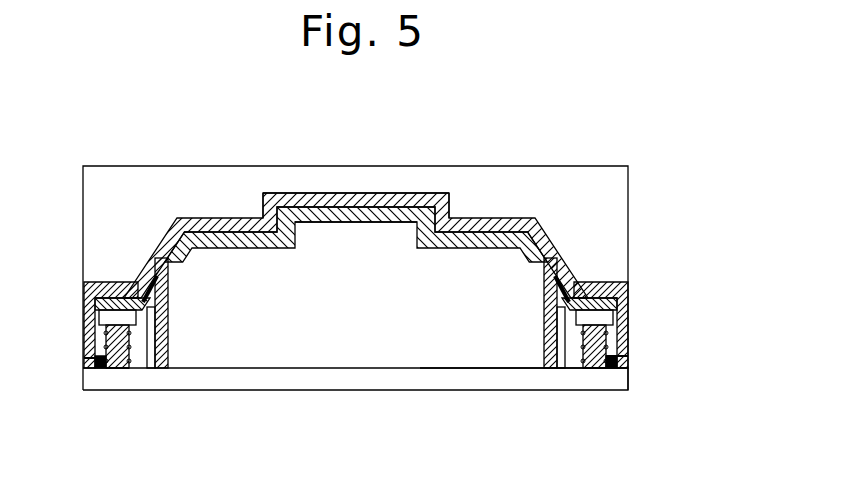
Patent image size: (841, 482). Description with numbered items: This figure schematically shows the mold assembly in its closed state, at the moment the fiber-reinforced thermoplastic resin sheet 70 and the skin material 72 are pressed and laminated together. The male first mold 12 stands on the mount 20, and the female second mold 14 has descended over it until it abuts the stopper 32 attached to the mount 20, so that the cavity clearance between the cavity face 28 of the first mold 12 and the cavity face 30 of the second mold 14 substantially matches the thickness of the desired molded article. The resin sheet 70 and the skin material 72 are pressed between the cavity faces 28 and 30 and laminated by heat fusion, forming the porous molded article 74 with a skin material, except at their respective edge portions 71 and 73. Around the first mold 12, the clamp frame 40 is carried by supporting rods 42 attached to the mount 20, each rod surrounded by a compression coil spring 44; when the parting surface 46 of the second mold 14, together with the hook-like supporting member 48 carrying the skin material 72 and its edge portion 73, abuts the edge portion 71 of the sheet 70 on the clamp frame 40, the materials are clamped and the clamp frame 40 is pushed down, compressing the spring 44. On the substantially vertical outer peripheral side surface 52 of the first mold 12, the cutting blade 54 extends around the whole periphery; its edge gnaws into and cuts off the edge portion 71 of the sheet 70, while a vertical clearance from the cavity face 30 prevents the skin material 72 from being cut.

The first mold 12 is at (307, 338).
The second mold 14 is at (558, 178).
The mount 20 is at (527, 377).
The cavity face 28 is at (477, 246).
The cavity face 30 is at (330, 193).
The stopper 32 is at (100, 338).
The clamp frame 40 is at (617, 304).
The supporting rod 42 is at (113, 377).
The compression coil spring 44 is at (105, 358).
The parting surface 46 is at (82, 282).
The supporting member 48 is at (622, 283).
The outer peripheral side surface 52 is at (552, 328).
The cutting blade 54 is at (170, 308).
The fiber-reinforced thermoplastic resin sheet 70 is at (382, 221).
The edge portion 71 is at (108, 306).
The skin material 72 is at (410, 193).
The edge portion 73 is at (138, 283).
The fiber-reinforced thermoplastic resin molded article 74 is at (243, 217).